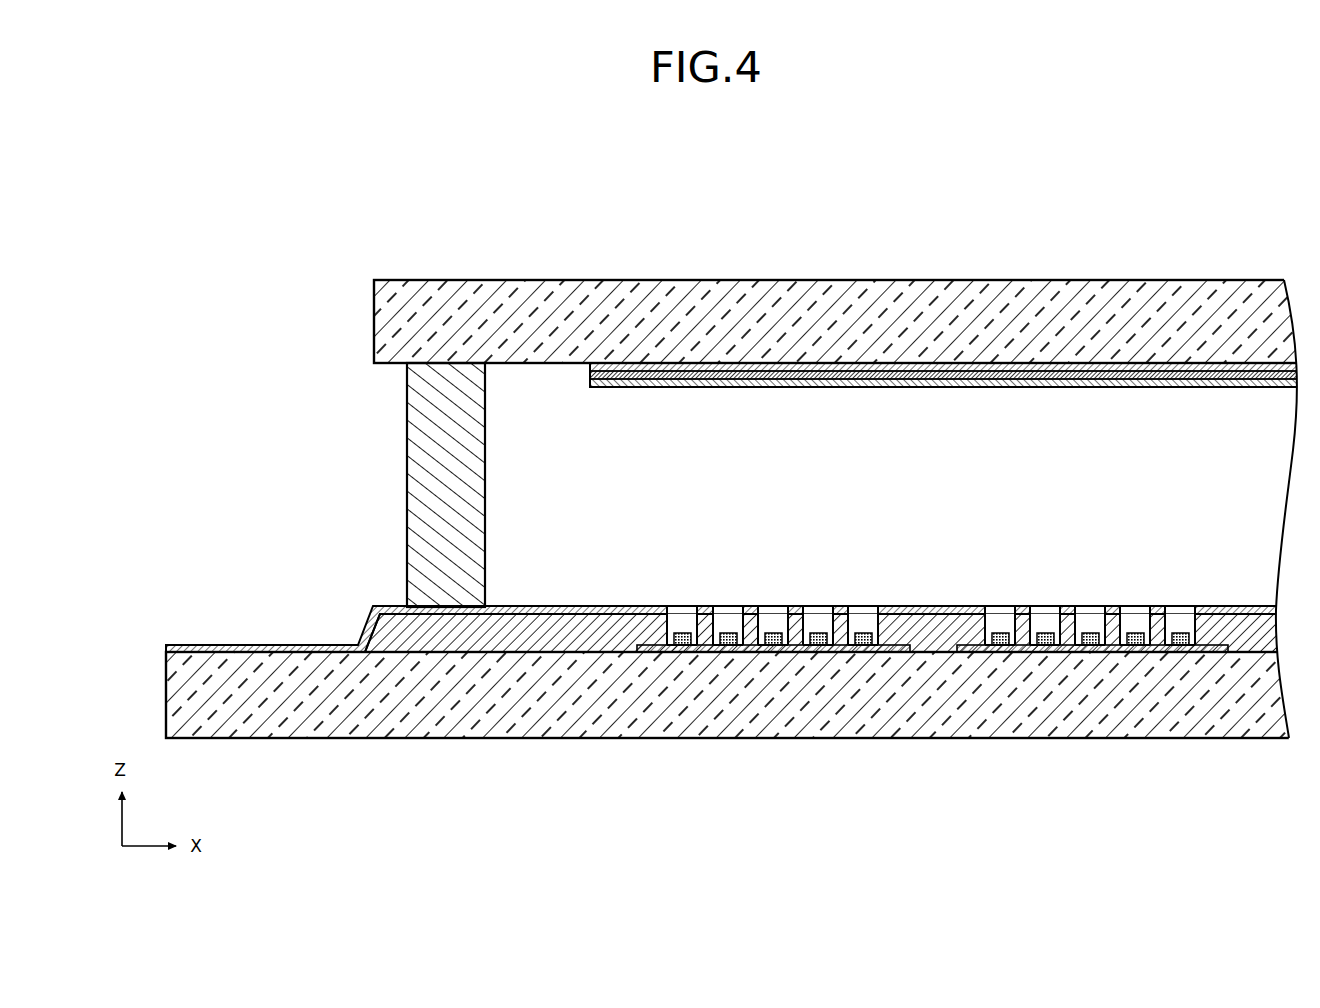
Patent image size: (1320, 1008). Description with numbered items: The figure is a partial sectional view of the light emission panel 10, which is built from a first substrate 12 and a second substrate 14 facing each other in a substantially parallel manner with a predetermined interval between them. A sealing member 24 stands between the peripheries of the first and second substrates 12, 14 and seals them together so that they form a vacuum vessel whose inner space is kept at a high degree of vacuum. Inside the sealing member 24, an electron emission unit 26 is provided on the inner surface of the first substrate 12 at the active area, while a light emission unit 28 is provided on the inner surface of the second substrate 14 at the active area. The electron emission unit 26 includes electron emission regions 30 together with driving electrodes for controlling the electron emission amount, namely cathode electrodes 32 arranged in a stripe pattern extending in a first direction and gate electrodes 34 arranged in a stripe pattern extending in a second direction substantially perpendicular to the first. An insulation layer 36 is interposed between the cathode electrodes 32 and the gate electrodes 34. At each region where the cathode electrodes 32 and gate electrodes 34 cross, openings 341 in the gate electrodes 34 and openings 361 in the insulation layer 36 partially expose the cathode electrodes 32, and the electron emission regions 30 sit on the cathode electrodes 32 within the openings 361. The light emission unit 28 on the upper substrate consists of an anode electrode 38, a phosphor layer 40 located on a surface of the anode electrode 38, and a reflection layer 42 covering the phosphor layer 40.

The light emission panel 10 is at (981, 200).
The first substrate 12 is at (590, 718).
The second substrate 14 is at (428, 300).
The sealing member 24 is at (470, 470).
The electron emission unit 26 is at (1160, 586).
The light emission unit 28 is at (800, 397).
The electron emission regions 30 is at (683, 645).
The cathode electrodes 32 is at (1033, 652).
The gate electrodes 34 is at (628, 606).
The insulation layer 36 is at (486, 637).
The anode electrode 38 is at (847, 364).
The phosphor layer 40 is at (797, 372).
The reflection layer 42 is at (742, 363).
The openings 341 is at (728, 611).
The openings 361 is at (818, 624).